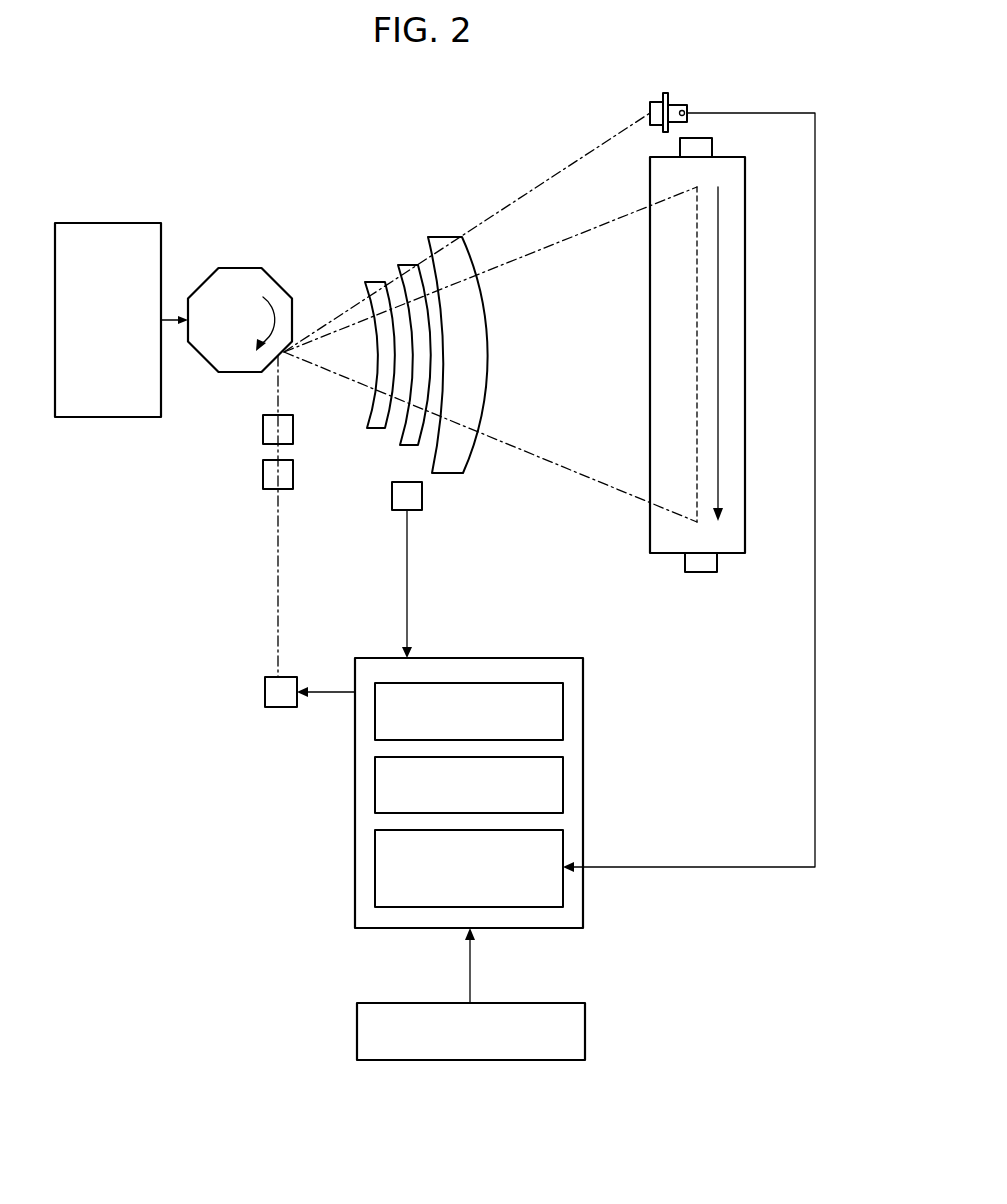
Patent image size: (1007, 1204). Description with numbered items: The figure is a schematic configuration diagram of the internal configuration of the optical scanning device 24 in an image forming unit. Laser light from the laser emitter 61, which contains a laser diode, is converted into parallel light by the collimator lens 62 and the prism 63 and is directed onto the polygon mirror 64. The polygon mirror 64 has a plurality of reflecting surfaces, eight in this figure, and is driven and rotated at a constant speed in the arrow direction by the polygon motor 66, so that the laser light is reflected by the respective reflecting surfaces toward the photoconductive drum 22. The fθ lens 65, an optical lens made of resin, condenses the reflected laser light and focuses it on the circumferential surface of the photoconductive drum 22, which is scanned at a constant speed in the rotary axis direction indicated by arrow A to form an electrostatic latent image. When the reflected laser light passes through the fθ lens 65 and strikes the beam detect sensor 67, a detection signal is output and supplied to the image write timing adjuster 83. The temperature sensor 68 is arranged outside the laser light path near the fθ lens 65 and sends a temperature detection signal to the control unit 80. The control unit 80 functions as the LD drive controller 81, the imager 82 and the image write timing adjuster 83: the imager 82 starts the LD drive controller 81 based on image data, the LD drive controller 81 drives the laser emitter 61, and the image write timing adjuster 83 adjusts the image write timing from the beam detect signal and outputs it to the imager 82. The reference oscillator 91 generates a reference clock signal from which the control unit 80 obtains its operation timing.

The photoconductive drum 22 is at (745, 527).
The optical scanning device 24 is at (558, 120).
The laser emitter 61 is at (265, 692).
The collimator lens 62 is at (263, 468).
The prism 63 is at (263, 423).
The polygon mirror 64 is at (243, 268).
The fθ lens 65 is at (402, 221).
The polygon motor 66 is at (127, 223).
The beam detect sensor 67 is at (680, 105).
The temperature sensor 68 is at (392, 497).
The control unit 80 is at (498, 770).
The LD drive controller 81 is at (565, 718).
The imager 82 is at (565, 783).
The image write timing adjuster 83 is at (565, 832).
The reference oscillator 91 is at (585, 1012).